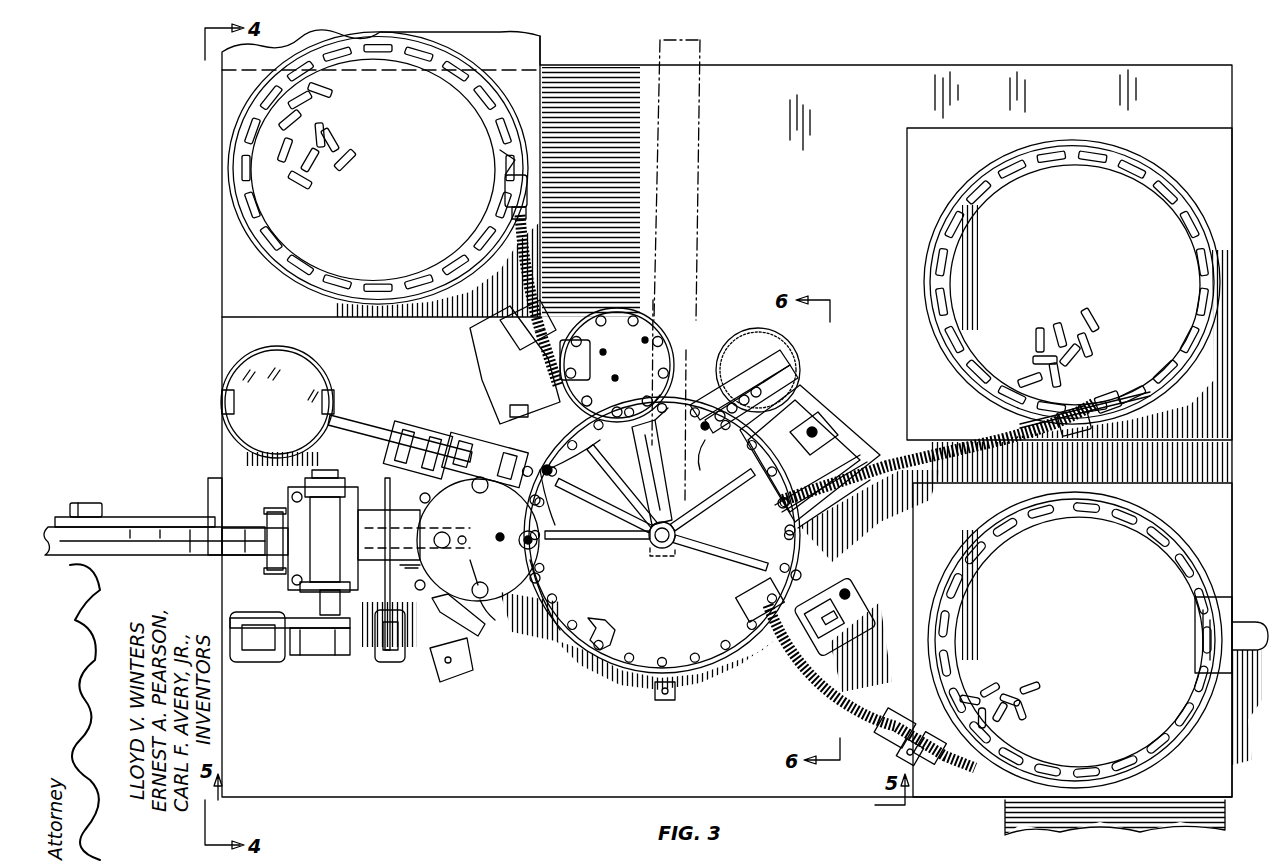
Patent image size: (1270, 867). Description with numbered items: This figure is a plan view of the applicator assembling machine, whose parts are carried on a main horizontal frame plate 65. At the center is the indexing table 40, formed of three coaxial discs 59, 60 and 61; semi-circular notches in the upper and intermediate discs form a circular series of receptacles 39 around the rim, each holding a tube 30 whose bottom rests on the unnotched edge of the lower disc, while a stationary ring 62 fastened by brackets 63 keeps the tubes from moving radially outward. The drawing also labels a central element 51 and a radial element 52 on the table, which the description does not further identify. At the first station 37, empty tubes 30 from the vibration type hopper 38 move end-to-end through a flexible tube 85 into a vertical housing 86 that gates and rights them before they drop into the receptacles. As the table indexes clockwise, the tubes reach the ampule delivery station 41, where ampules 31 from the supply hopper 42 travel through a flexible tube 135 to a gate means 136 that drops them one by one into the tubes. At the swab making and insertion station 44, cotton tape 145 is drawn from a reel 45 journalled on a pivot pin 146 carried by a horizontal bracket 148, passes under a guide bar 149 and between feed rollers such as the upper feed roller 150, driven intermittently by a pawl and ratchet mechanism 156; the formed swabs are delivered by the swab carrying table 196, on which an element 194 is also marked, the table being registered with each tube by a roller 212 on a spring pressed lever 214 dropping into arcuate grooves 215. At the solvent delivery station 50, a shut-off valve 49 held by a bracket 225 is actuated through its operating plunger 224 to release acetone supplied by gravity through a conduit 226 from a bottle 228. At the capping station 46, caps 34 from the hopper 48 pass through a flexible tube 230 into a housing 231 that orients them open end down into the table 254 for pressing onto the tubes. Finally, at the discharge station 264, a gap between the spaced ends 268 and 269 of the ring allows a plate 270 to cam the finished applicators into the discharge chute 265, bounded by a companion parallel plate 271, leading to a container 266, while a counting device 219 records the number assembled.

The tube 30 is at (1098, 346).
The ampule 31 is at (958, 655).
The cap 34 is at (345, 168).
The first station 37 is at (834, 440).
The hopper 38 is at (1093, 269).
The receptacle 39 is at (785, 532).
The table 40 is at (693, 622).
The ampule delivery station 41 is at (858, 584).
The supply hopper 42 is at (1120, 669).
The swab making and insertion station 44 is at (503, 630).
The reel 45 is at (178, 548).
The capping station 46 is at (562, 322).
The hopper 48 is at (400, 219).
The shut-off valve 49 is at (500, 440).
The solvent delivery station 50 is at (562, 472).
The central shaft 51 is at (657, 566).
The spoke arm 52 is at (700, 552).
The upper disc 59 is at (550, 632).
The intermediate disc 60 is at (597, 622).
The lower disc 61 is at (618, 642).
The stationary ring 62 is at (592, 666).
The bracket 63 is at (655, 692).
The main horizontal frame plate 65 is at (383, 748).
The flexible tube 85 is at (1000, 440).
The vertical housing 86 is at (810, 500).
The flexible tube 135 is at (828, 690).
The gate means 136 is at (765, 598).
The cotton tape 145 is at (250, 528).
The pivot pin 146 is at (92, 503).
The horizontal bracket 148 is at (132, 517).
The guide bar 149 is at (272, 566).
The upper feed roller 150 is at (379, 560).
The pawl and ratchet mechanism 156 is at (320, 658).
The pin 194 is at (462, 544).
The swab carrying table 196 is at (490, 526).
The roller 212 is at (475, 592).
The lever 214 is at (440, 612).
The arcuate grooves 215 is at (503, 541).
The counting device 219 is at (462, 672).
The operating plunger 224 is at (566, 500).
The bracket 225 is at (410, 460).
The conduit 226 is at (362, 424).
The bottle 228 is at (300, 424).
The flexible tube 230 is at (525, 258).
The housing 231 is at (490, 388).
The table 254 is at (672, 320).
The discharge station 264 is at (672, 472).
The discharge chute 265 is at (775, 382).
The container 266 is at (772, 350).
The ring end 268 is at (682, 376).
The ring end 269 is at (728, 435).
The plate 270 is at (810, 453).
The companion parallel plate 271 is at (730, 355).